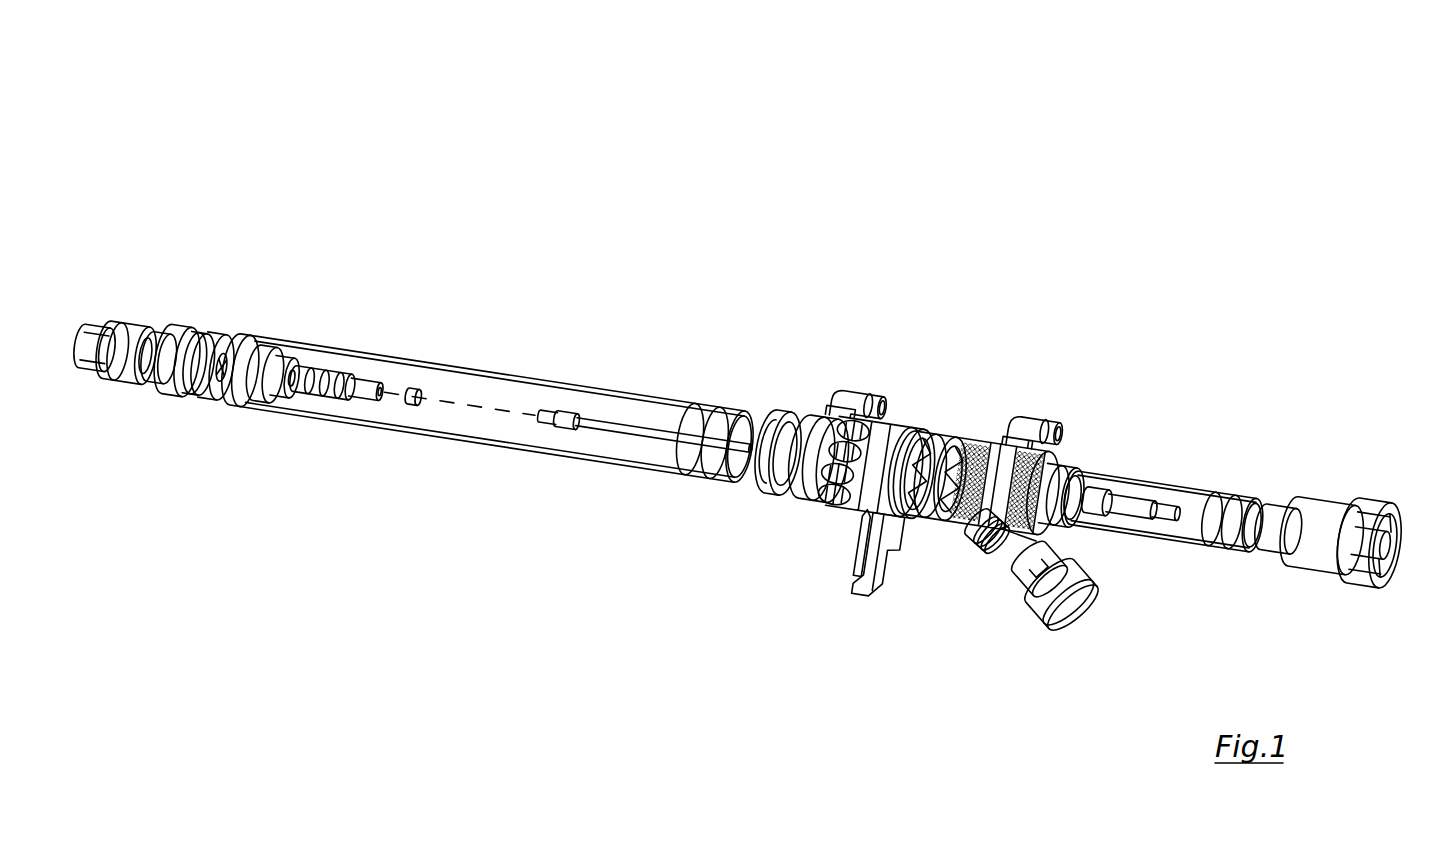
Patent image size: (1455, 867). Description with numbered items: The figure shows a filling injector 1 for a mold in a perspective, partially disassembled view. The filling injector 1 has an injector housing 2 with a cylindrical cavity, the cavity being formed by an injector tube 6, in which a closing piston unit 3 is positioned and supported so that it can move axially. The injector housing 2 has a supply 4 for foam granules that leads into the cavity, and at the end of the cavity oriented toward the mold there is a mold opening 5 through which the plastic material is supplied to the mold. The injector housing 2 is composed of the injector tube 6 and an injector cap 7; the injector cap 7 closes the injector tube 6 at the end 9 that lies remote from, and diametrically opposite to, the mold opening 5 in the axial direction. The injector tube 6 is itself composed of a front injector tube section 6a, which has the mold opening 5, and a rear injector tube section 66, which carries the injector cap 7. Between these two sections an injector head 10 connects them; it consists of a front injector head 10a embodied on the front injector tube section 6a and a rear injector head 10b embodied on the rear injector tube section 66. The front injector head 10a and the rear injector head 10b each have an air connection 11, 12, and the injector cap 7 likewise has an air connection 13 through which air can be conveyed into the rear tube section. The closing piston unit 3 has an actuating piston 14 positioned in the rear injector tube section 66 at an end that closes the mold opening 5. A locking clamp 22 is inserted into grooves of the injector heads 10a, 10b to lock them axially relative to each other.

The filling injector 1 is at (1073, 83).
The injector housing 2 is at (798, 254).
The closing piston unit 3 is at (760, 458).
The supply 4 is at (1094, 637).
The mold opening 5 is at (165, 388).
The injector tube 6 is at (477, 458).
The front injector tube section 6a is at (553, 435).
The injector cap 7 is at (1393, 531).
The end 9 is at (1337, 560).
The injector head 10 is at (963, 479).
The front injector head 10a is at (854, 513).
The rear injector head 10b is at (1023, 420).
The air connection 11 is at (842, 385).
The air connection 12 is at (1040, 417).
The air connection 13 is at (1397, 535).
The actuating piston 14 is at (1130, 505).
The locking clamp 22 is at (898, 580).
The tube 66 is at (1188, 488).